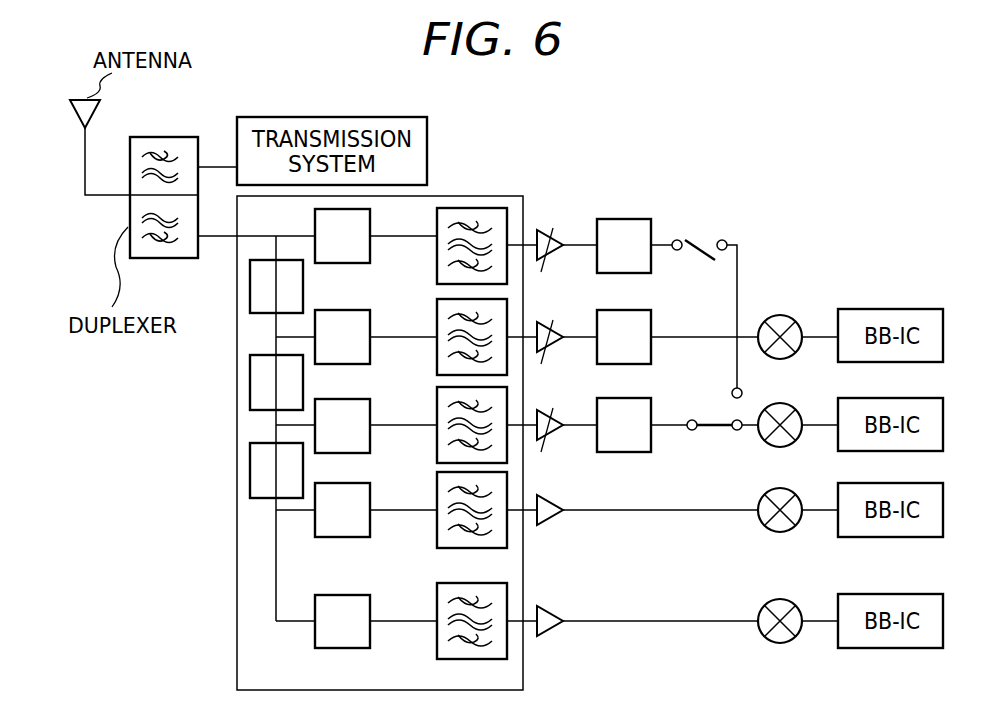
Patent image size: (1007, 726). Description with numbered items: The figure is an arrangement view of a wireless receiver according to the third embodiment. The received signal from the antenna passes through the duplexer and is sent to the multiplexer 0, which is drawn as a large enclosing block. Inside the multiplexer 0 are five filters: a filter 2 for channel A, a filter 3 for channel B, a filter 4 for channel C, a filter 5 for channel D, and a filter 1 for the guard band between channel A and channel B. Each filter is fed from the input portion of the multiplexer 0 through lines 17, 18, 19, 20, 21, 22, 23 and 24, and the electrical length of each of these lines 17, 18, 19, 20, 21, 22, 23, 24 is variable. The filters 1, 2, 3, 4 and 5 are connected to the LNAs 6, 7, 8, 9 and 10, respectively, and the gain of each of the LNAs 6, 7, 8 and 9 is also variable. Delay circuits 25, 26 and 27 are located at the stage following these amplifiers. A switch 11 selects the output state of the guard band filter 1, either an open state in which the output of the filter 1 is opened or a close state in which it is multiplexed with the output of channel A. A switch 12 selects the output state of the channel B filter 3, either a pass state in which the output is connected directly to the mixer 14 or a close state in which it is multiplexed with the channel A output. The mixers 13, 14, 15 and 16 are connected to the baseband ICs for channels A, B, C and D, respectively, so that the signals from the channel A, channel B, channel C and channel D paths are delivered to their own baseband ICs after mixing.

The multiplexer 0 is at (483, 196).
The filter for guard band 1 is at (507, 212).
The filter for channel A 2 is at (507, 302).
The filter for channel B 3 is at (507, 390).
The filter for channel C 4 is at (507, 477).
The filter for channel D 5 is at (507, 587).
The LNA 6 is at (555, 233).
The LNA 7 is at (555, 325).
The LNA 8 is at (555, 413).
The LNA 9 is at (555, 498).
The LNA 10 is at (555, 610).
The switch 11 is at (705, 242).
The switch 12 is at (717, 433).
The mixer 13 is at (785, 315).
The mixer 14 is at (785, 403).
The mixer 15 is at (785, 488).
The mixer 16 is at (785, 599).
The line 17 is at (372, 218).
The line 18 is at (250, 308).
The line 19 is at (372, 319).
The line 20 is at (250, 405).
The line 21 is at (372, 407).
The line 22 is at (250, 490).
The line 23 is at (372, 493).
The line 24 is at (372, 605).
The delay circuit 25 is at (635, 219).
The delay circuit 26 is at (635, 310).
The delay circuit 27 is at (635, 398).